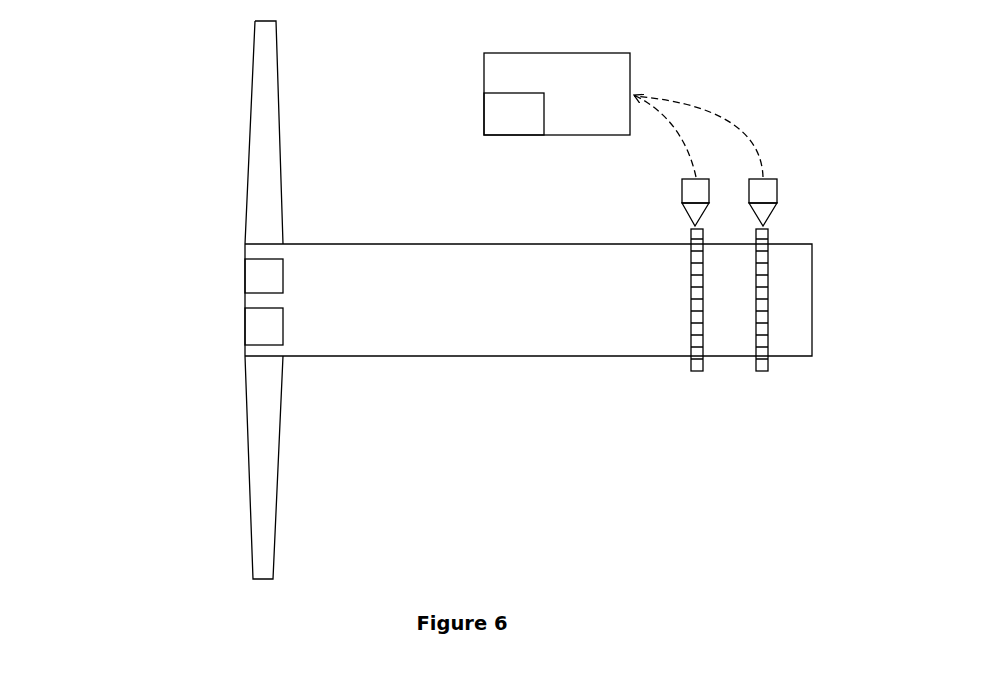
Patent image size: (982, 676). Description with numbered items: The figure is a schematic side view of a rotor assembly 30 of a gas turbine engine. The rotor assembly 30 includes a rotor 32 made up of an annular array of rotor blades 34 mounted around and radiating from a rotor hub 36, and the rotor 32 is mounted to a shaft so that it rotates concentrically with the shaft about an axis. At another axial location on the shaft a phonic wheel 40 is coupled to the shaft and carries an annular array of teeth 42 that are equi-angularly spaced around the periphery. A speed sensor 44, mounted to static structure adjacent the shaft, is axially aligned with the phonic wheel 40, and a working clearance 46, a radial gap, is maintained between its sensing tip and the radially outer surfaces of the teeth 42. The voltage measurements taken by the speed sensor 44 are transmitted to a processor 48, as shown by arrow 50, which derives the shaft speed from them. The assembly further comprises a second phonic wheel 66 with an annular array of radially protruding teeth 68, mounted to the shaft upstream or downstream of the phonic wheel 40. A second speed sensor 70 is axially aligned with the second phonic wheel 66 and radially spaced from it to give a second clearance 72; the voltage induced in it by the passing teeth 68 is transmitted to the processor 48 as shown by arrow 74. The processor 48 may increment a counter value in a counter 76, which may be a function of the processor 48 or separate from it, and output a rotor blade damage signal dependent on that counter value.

The rotor assembly 30 is at (434, 300).
The rotor 32 is at (243, 273).
The rotor blades 34 is at (280, 133).
The rotor hub 36 is at (289, 243).
The phonic wheel 40 is at (689, 241).
The teeth 42 is at (690, 266).
The speed sensor 44 is at (682, 187).
The working clearance 46 is at (686, 229).
The processor 48 is at (562, 110).
The arrow 50 is at (678, 124).
The second phonic wheel 66 is at (768, 365).
The teeth 68 is at (768, 265).
The second speed sensor 70 is at (780, 192).
The second clearance 72 is at (770, 229).
The arrow 74 is at (714, 114).
The counter 76 is at (499, 130).